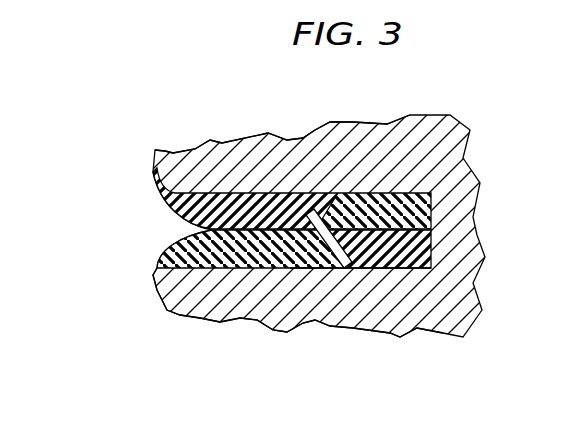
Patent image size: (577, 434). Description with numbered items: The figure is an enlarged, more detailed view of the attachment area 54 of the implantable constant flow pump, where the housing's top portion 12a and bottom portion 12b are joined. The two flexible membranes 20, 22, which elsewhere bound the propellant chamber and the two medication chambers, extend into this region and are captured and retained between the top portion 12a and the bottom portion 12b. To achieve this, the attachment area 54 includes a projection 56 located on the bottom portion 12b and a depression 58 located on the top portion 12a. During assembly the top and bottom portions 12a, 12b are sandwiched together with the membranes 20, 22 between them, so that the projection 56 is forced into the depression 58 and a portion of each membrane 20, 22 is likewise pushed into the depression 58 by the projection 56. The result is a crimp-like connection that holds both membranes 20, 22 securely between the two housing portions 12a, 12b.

The attachment area 54 is at (484, 119).
The top portion 12a is at (250, 166).
The bottom portion 12b is at (258, 312).
The flexible membrane 20 is at (168, 203).
The flexible membrane 22 is at (160, 273).
The depression 58 is at (335, 191).
The projection 56 is at (312, 270).